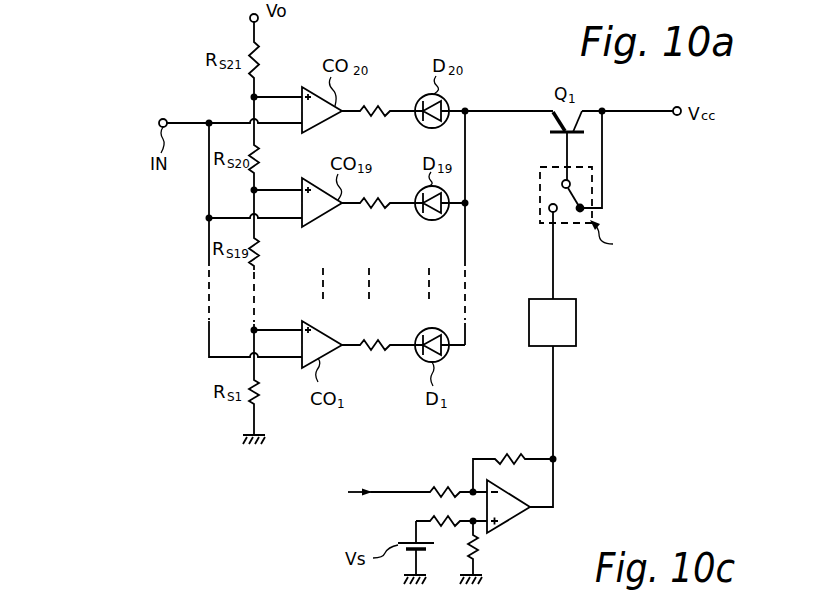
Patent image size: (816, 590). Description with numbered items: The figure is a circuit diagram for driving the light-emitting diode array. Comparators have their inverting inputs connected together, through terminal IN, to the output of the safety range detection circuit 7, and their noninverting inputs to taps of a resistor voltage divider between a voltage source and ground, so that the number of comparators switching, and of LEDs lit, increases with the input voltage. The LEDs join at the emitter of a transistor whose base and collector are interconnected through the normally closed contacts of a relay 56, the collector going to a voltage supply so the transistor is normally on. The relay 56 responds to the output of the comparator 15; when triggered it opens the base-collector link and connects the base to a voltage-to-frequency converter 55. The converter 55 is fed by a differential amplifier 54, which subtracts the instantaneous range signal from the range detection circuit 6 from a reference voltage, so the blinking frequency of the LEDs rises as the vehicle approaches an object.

The safety range detection circuit 7 is at (114, 107).
The range detection circuit 6 is at (289, 495).
The comparator 15 is at (670, 254).
The differential amplifier 54 is at (505, 522).
The voltage-to-frequency converter 55 is at (577, 326).
The relay 56 is at (540, 203).